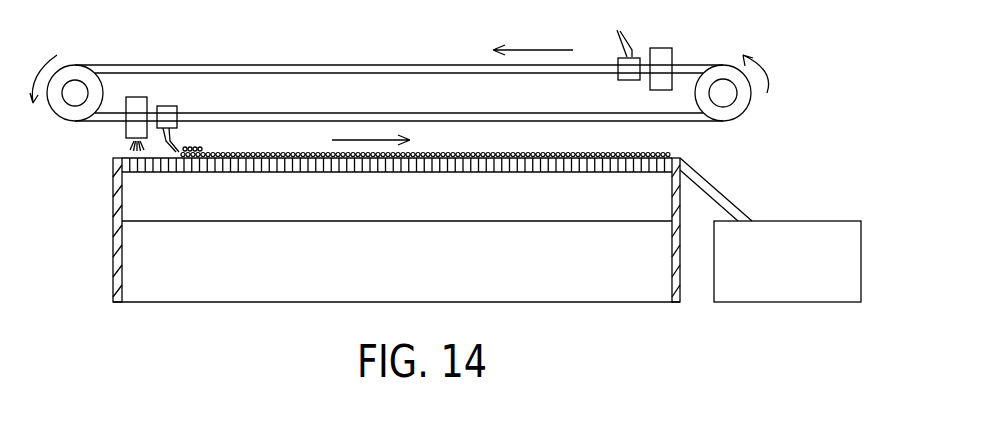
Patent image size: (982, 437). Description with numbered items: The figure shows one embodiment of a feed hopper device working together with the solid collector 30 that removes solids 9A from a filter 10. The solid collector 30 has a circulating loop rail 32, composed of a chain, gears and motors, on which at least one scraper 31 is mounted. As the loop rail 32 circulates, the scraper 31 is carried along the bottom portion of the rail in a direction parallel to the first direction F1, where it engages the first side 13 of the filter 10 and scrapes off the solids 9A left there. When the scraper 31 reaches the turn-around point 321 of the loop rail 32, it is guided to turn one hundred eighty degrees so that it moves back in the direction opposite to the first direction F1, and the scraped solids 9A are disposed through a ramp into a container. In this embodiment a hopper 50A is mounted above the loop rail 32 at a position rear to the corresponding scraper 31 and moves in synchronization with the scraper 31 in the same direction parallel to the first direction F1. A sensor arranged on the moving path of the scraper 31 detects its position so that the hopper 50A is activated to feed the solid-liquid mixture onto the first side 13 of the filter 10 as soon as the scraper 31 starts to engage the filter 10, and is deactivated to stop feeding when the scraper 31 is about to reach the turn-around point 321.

The solid collector 30 is at (430, 60).
The scraper 31 is at (176, 148).
The loop rail 32 is at (298, 118).
The turn-around point 321 is at (728, 97).
The hopper 50A is at (128, 128).
The solids 9A is at (207, 152).
The first side 13 is at (123, 155).
The filter 10 is at (469, 228).
The first direction F1 is at (387, 140).